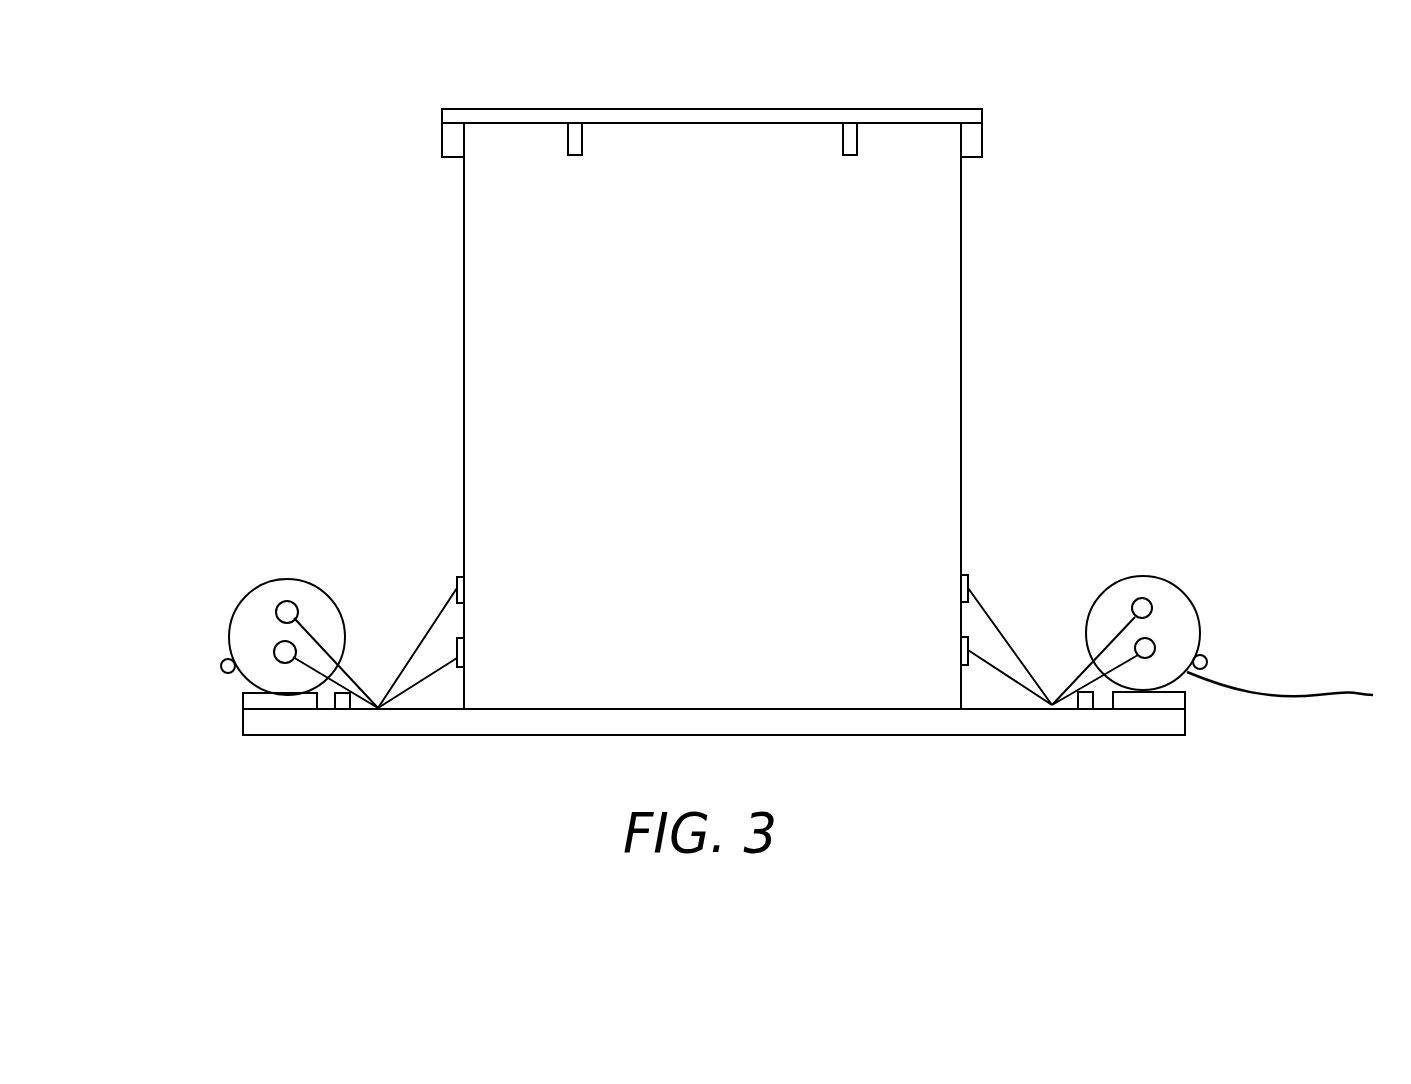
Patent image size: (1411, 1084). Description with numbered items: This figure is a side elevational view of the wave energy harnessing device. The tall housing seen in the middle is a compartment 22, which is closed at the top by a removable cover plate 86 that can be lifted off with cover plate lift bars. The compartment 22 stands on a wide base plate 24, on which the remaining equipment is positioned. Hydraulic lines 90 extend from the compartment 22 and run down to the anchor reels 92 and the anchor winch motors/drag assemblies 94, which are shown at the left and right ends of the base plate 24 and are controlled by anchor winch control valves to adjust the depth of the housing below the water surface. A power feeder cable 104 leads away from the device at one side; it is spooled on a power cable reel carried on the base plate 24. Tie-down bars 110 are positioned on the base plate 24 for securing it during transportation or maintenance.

The compartment 22 is at (961, 315).
The base plate 24 is at (1000, 735).
The cover plate 86 is at (732, 107).
The hydraulic lines 90 is at (442, 660).
The anchor reel 92 is at (227, 644).
The anchor winch motor/drag assembly 94 is at (243, 600).
The power feeder cable 104 is at (1317, 695).
The tie-down bar 110 is at (343, 703).